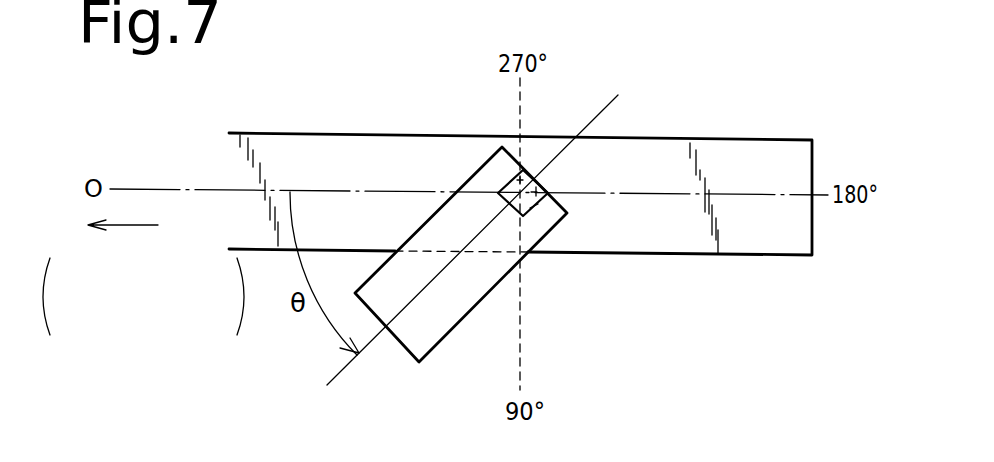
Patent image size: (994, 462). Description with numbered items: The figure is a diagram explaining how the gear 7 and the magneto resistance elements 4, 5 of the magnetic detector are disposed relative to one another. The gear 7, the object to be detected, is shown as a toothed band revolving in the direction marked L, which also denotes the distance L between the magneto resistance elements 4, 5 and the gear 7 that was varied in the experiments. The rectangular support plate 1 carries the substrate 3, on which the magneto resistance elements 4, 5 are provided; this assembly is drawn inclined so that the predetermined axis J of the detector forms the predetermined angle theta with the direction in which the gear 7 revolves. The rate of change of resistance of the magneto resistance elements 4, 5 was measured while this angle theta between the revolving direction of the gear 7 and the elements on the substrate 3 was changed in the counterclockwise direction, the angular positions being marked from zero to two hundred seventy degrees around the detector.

The support plate 1 is at (473, 306).
The substrate 3 is at (538, 204).
The magneto resistance element 4 is at (525, 180).
The magneto resistance element 5 is at (543, 192).
The gear 7 is at (730, 140).
The predetermined axis J is at (413, 297).
The distance between the magneto resistance elements and the gear L is at (129, 283).